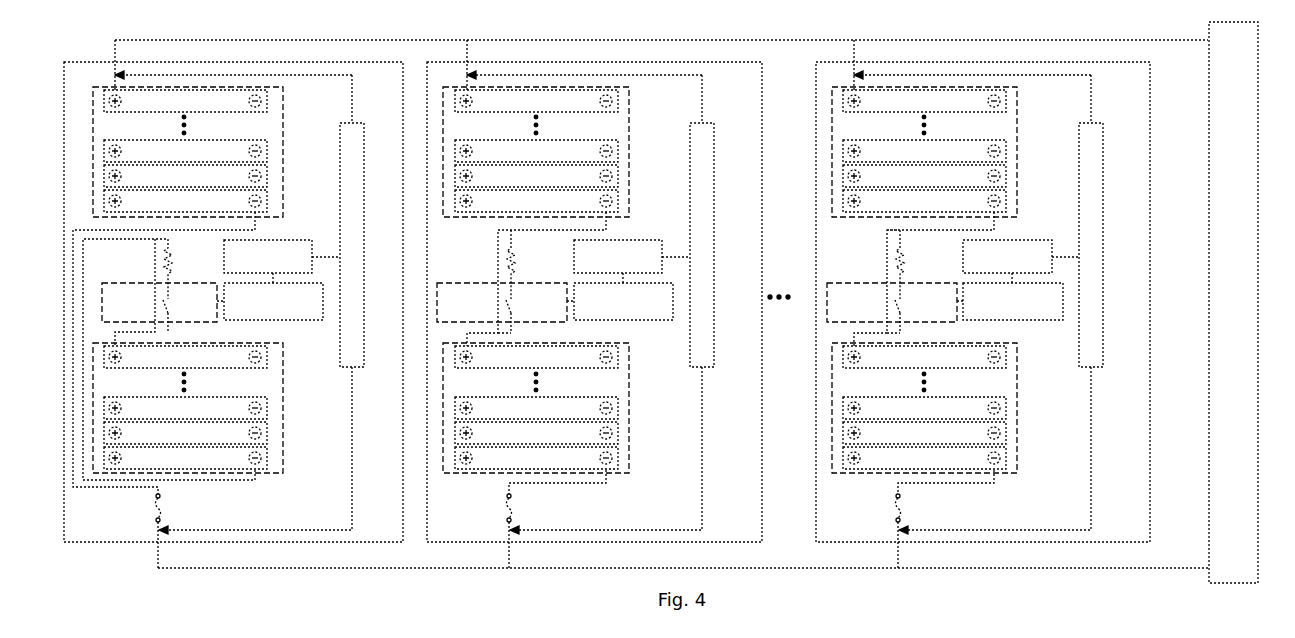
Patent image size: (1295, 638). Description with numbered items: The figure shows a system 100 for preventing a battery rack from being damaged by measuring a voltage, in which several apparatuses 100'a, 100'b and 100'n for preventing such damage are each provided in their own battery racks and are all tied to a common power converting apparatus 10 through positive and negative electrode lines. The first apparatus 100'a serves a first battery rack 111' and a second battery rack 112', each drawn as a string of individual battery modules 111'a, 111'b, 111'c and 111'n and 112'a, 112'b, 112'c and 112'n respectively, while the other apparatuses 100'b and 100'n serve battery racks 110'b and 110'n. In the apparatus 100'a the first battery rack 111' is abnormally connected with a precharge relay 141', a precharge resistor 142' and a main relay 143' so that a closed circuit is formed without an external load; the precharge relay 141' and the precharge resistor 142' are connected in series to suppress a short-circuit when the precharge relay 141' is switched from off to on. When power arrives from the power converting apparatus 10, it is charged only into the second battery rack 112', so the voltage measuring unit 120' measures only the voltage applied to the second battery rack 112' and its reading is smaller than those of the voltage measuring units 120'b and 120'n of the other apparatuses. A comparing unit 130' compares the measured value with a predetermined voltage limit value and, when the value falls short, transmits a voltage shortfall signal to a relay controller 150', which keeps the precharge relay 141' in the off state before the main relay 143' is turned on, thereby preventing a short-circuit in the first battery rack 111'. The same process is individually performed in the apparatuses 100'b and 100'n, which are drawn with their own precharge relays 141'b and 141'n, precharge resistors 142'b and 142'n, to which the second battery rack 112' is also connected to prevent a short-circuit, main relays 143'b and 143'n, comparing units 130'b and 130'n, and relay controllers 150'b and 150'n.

The system for preventing a battery rack from being damaged by measuring a voltage 100 is at (661, 284).
The power converting apparatus 10 is at (1259, 300).
The apparatus for preventing a battery rack from being damaged by measuring a voltag 100'a is at (233, 296).
The apparatus for preventing a battery rack from being damaged by measuring a voltag 100'b is at (594, 296).
The apparatus for preventing a battery rack from being damaged by measuring a voltag 100'n is at (983, 296).
The battery rack 110'b is at (561, 280).
The battery rack 110'n is at (950, 280).
The first battery rack 111' is at (209, 408).
The battery module 111'a is at (211, 458).
The battery module 111'b is at (211, 433).
The battery module 111'c is at (210, 402).
The battery module 111'n is at (211, 357).
The second battery rack 112' is at (209, 152).
The battery module 112'a is at (211, 201).
The battery module 112'b is at (211, 176).
The battery module 112'c is at (210, 145).
The battery module 112'n is at (211, 101).
The voltage measuring unit 120' is at (363, 228).
The voltage measuring unit 120'b is at (716, 228).
The voltage measuring unit 120'n is at (1105, 228).
The comparing unit 130' is at (278, 260).
The comparing unit 130'b is at (628, 260).
The comparing unit 130'n is at (1018, 260).
The precharge relay 141' is at (185, 316).
The relay switch 141'b is at (532, 316).
The relay switch 141'n is at (921, 316).
The precharge resistor 142' is at (187, 269).
The precharge resistor 142'b is at (537, 264).
The precharge resistor 142'n is at (926, 264).
The main relay 143' is at (159, 302).
The relay unit 143'b is at (502, 302).
The relay unit 143'n is at (892, 302).
The relay controller 150' is at (280, 312).
The relay controller 150'b is at (629, 312).
The relay controller 150'n is at (1018, 312).